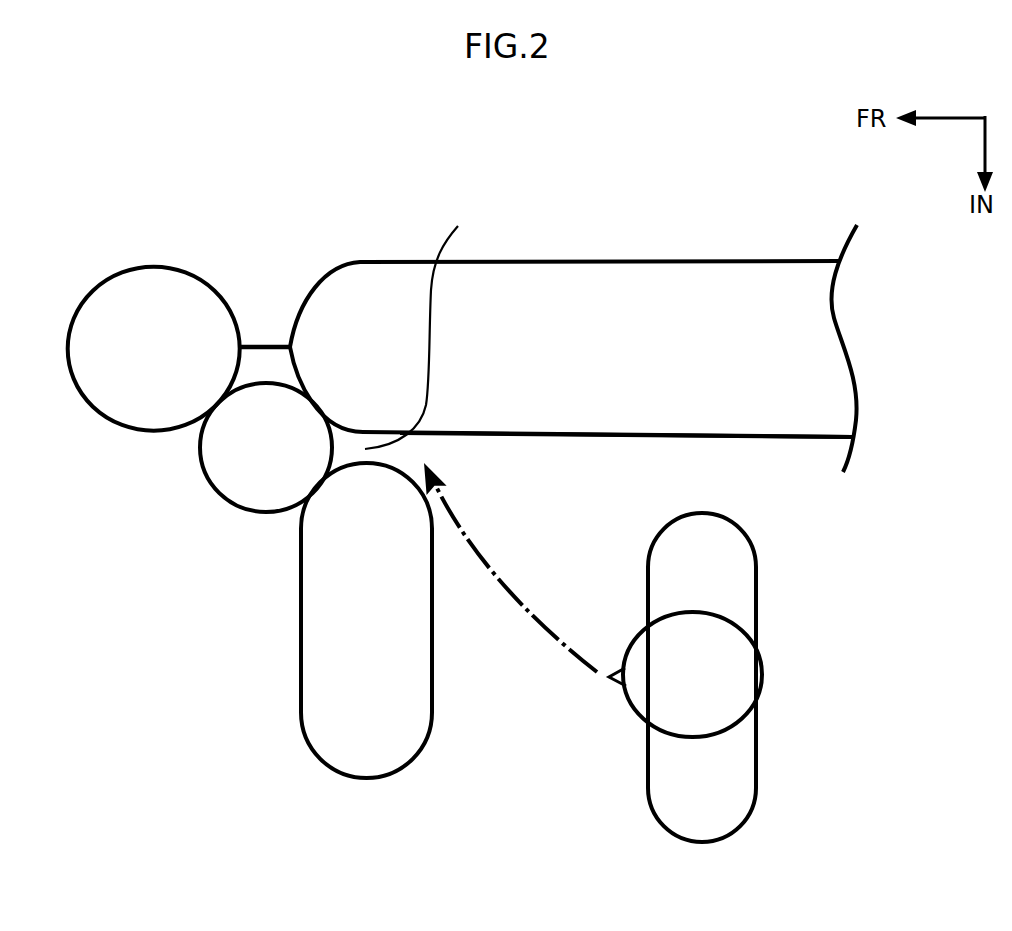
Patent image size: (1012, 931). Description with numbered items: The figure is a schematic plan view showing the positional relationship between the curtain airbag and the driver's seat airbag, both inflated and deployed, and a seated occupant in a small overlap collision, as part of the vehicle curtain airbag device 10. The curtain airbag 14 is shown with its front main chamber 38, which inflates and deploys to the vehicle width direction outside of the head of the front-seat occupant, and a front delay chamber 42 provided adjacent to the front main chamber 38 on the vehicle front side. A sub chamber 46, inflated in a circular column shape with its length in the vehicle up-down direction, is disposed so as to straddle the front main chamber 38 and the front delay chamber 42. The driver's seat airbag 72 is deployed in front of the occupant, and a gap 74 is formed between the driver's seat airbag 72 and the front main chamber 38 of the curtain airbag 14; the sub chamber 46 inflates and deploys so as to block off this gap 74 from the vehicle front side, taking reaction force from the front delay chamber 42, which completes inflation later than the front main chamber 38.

The vehicle curtain airbag device 10 is at (178, 452).
The curtain airbag 14 is at (640, 257).
The front main chamber 38 is at (565, 437).
The front delay chamber 42 is at (89, 408).
The sub chamber 46 is at (217, 496).
The driver's seat airbag 72 is at (301, 630).
The gap 74 is at (420, 320).